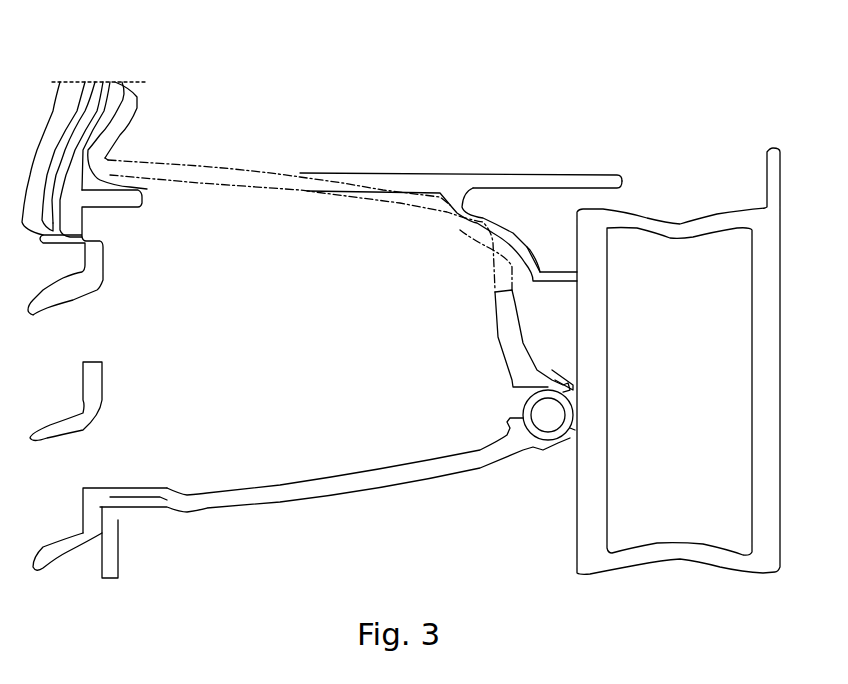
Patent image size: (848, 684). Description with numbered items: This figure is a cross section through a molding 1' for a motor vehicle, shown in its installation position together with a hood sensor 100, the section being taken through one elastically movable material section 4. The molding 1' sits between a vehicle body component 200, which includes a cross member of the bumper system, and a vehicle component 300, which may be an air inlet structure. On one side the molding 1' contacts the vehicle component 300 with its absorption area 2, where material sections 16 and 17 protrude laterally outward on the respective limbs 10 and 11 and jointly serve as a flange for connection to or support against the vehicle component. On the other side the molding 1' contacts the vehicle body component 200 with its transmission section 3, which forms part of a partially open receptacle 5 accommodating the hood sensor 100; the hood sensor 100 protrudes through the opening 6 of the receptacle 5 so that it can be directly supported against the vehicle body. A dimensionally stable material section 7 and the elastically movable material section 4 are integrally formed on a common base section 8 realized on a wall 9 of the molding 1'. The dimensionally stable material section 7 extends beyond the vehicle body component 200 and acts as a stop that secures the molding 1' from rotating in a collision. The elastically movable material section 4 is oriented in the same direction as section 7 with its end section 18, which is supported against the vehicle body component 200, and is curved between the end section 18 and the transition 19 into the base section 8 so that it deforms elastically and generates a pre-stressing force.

The vehicle component 300 is at (117, 82).
The material section 16 is at (132, 110).
The absorption area 2 is at (105, 158).
The limb 10 is at (222, 165).
The wall 9 is at (263, 182).
The molding 1' is at (461, 144).
The base section 8 is at (412, 173).
The transition 19 is at (483, 185).
The dimensionally stable material section 7 is at (570, 175).
The vehicle body component 200 is at (667, 223).
The elastically movable material section 4 is at (527, 247).
The end section 18 is at (552, 290).
The opening 6 is at (555, 378).
The hood sensor 100 is at (522, 410).
The transmission section 3 is at (572, 428).
The limb 11 is at (293, 503).
The receptacle 5 is at (480, 497).
The material section 17 is at (117, 580).